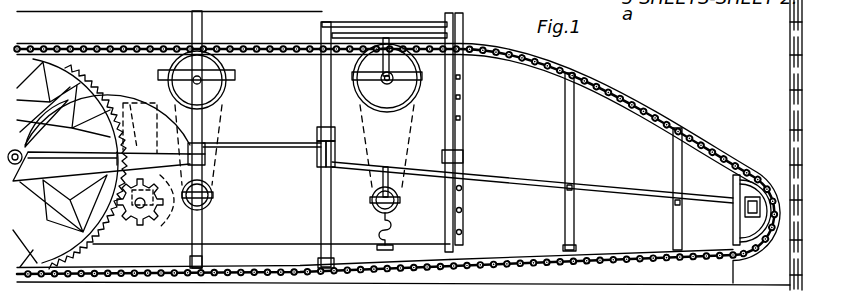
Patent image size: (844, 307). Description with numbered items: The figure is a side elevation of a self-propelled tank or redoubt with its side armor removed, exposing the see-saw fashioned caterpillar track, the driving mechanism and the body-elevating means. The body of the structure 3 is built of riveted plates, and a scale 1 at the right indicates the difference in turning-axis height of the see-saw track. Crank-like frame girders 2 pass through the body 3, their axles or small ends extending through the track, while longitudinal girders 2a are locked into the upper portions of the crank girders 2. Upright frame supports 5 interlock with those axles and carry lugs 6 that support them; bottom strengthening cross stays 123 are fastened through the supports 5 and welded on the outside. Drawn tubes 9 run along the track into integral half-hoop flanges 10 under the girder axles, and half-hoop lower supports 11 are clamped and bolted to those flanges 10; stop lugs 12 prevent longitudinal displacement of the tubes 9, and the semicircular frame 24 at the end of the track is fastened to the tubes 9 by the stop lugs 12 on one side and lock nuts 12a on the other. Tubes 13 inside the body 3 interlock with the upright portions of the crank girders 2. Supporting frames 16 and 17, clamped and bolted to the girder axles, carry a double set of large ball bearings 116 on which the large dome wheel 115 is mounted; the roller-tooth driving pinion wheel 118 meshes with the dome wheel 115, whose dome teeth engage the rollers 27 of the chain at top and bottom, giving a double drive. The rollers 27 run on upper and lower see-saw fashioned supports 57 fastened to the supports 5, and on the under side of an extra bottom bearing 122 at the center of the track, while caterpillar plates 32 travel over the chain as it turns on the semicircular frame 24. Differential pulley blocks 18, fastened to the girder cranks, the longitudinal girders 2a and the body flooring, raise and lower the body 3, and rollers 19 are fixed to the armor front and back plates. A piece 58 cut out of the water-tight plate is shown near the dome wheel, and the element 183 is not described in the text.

The scale 1 is at (790, 40).
The frame girder 2 is at (203, 29).
The longitudinal girder 2a is at (357, 33).
The body of the structure 3 is at (99, 19).
The upright frame support 5 is at (565, 120).
The lug 6 is at (206, 160).
The drawn tube 9 is at (621, 193).
The half-hoop flange 10 is at (319, 168).
The half-hoop lower support 11 is at (333, 168).
The stop lug 12 is at (463, 160).
The lock nut 12a is at (745, 216).
The tube 13 is at (248, 144).
The supporting frame 16 is at (143, 128).
The supporting frame 17 is at (116, 80).
The differential pulley block 18 is at (226, 86).
The roller 19 is at (460, 118).
The semicircular frame 24 is at (735, 190).
The roller 27 is at (629, 104).
The caterpillar plate 32 is at (662, 110).
The see-saw fashioned support 57 is at (513, 64).
The cut-out piece of water-tight plate 58 is at (172, 205).
The large dome wheel 115 is at (25, 278).
The large ball bearings 116 is at (87, 79).
The roller tooth driving pinion wheel 118 is at (133, 226).
The extra bottom bearing 122 is at (263, 267).
The bottom strengthening cross stay 123 is at (578, 257).
The part 183 is at (557, 302).